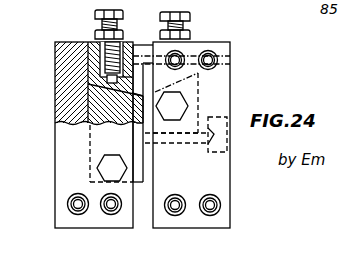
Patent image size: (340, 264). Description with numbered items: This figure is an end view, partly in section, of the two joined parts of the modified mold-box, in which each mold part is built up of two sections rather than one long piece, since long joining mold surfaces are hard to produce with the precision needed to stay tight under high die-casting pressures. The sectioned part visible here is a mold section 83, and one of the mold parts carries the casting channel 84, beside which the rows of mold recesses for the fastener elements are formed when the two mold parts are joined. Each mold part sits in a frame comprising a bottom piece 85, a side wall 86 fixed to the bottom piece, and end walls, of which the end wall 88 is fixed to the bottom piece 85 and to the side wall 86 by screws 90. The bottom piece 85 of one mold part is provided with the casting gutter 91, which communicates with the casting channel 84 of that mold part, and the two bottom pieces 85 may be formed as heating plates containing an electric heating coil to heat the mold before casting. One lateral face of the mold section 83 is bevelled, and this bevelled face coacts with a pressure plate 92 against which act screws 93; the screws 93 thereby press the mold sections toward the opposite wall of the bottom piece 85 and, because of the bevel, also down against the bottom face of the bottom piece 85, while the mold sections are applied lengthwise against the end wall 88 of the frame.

The mold section 83 is at (97, 166).
The casting channel 84 is at (150, 133).
The bottom piece 85 is at (58, 111).
The side wall 86 is at (97, 40).
The end wall 88 is at (229, 73).
The screws 90 is at (68, 203).
The casting gutter 91 is at (228, 147).
The pressure plate 92 is at (88, 84).
The screws 93 is at (160, 14).